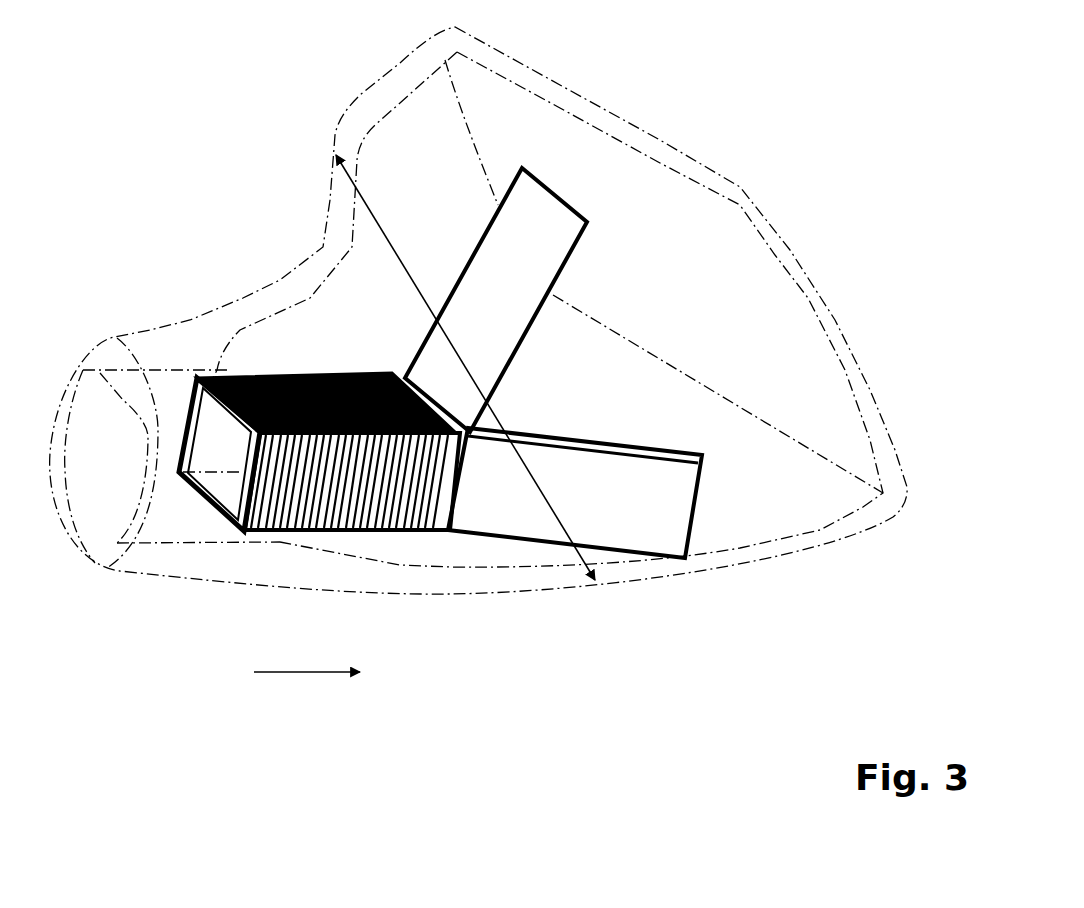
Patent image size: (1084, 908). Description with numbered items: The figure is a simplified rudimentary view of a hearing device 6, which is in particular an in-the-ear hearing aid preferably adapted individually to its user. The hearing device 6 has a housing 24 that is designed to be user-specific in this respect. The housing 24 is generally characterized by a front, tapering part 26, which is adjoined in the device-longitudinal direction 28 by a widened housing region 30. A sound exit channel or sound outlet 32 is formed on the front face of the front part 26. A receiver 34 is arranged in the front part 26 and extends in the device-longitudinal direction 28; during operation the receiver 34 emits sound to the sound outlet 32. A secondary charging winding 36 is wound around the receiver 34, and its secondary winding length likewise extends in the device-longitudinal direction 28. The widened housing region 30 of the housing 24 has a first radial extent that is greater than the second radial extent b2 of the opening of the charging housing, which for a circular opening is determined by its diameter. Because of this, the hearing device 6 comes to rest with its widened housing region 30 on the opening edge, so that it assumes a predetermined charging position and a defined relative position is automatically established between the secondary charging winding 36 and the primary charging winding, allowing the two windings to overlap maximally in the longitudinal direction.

The hearing device 6 is at (796, 112).
The housing 24 is at (661, 192).
The widened housing region 30 is at (407, 152).
The sound outlet 32 is at (83, 490).
The receiver 34 is at (223, 448).
The front tapering part 26 is at (233, 567).
The secondary charging winding 36 is at (368, 533).
The device-longitudinal direction 28 is at (300, 676).
The second radial extent b2 is at (578, 562).